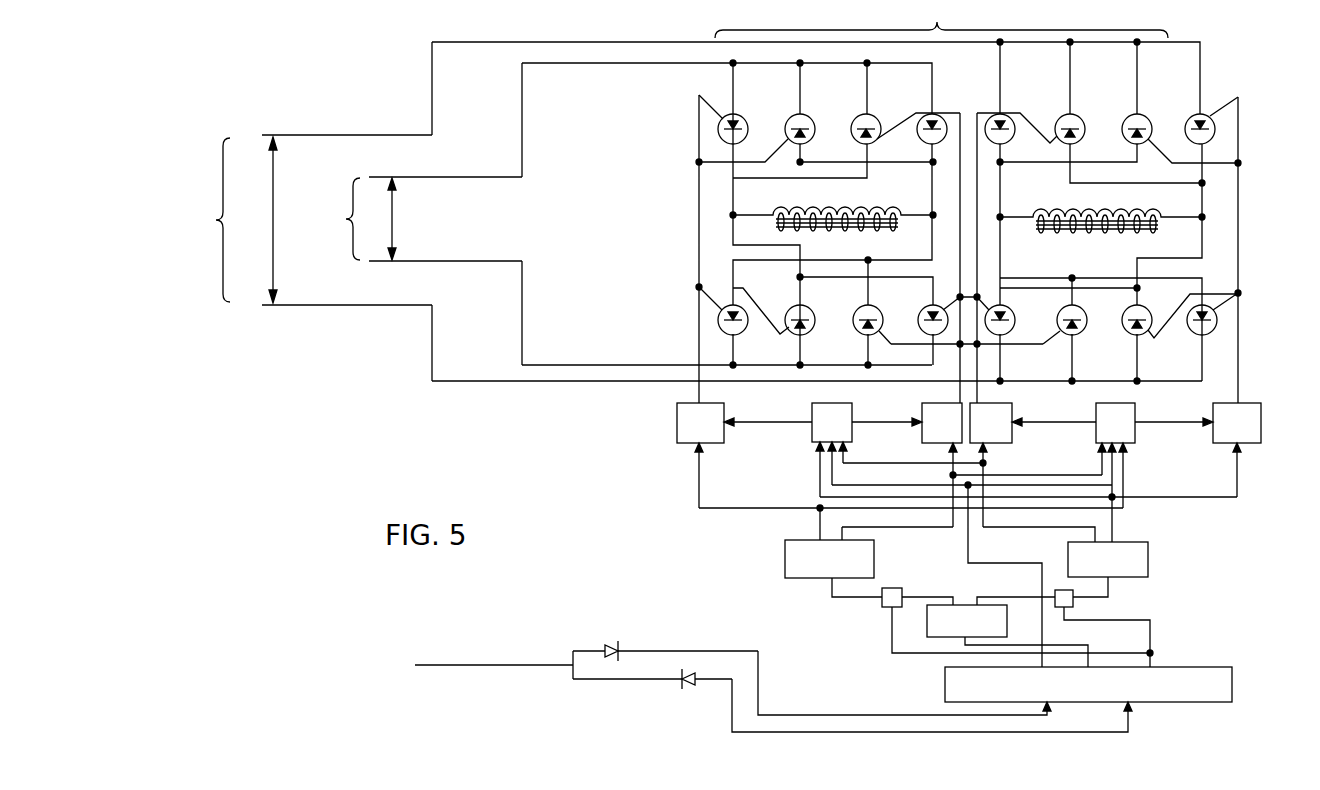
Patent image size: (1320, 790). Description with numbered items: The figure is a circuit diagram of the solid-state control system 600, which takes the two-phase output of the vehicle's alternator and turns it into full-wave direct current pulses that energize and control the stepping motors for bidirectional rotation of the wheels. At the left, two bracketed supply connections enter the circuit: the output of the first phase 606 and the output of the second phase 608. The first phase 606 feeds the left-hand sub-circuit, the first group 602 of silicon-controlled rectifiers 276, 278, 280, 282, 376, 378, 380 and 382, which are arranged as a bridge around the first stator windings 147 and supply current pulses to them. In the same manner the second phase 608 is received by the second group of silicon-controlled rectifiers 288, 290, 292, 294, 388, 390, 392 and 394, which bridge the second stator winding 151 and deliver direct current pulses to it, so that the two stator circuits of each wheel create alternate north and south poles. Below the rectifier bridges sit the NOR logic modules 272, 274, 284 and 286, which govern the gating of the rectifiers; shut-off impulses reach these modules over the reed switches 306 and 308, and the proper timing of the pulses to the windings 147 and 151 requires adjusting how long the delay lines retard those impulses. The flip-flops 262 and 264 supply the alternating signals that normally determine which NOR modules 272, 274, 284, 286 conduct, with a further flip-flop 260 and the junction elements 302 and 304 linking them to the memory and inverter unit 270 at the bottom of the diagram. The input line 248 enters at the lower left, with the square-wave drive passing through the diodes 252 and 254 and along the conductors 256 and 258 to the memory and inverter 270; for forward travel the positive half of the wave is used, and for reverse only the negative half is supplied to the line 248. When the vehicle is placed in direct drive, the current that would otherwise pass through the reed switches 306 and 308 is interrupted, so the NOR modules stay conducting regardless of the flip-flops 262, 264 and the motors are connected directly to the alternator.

The stator windings 147 is at (857, 209).
The second stator winding 151 is at (1082, 211).
The line 248 is at (445, 665).
The diode 252 is at (620, 648).
The diode 254 is at (686, 690).
The conductor 256 is at (834, 700).
The conductor 258 is at (922, 708).
The flip flop 260 is at (927, 626).
The flip-flop 262 is at (785, 577).
The flip-flop 264 is at (1148, 555).
The memory and inverter 270 is at (1192, 666).
The NOR logic module 272 is at (681, 446).
The NOR logic module 274 is at (923, 410).
The silicon-controlled rectifier 276 is at (809, 333).
The silicon-controlled rectifier 278 is at (811, 118).
The silicon-controlled rectifier 280 is at (858, 314).
The silicon-controlled rectifier 282 is at (877, 118).
The NOR logic module 284 is at (1012, 412).
The NOR logic module 286 is at (1258, 428).
The silicon-controlled rectifier 288 is at (1086, 318).
The silicon-controlled rectifier 290 is at (1081, 118).
The silicon-controlled rectifier 292 is at (1151, 316).
The silicon-controlled rectifier 294 is at (1147, 118).
The junction 302 is at (900, 576).
The junction 304 is at (1073, 600).
The reed switch 306 is at (813, 441).
The reed switch 308 is at (1135, 406).
The silicon-controlled rectifier 376 is at (742, 118).
The silicon-controlled rectifier 378 is at (740, 334).
The silicon-controlled rectifier 380 is at (942, 116).
The silicon-controlled rectifier 382 is at (918, 316).
The silicon-controlled rectifier 388 is at (1010, 116).
The silicon-controlled rectifier 390 is at (1014, 318).
The silicon-controlled rectifier 392 is at (1209, 116).
The silicon-controlled rectifier 394 is at (1217, 326).
The solid-state control system 600 is at (941, 21).
The first group of silicon-controlled rectifiers 602 is at (716, 101).
The output of the first phase 606 is at (369, 219).
The output of the second phase 608 is at (238, 220).